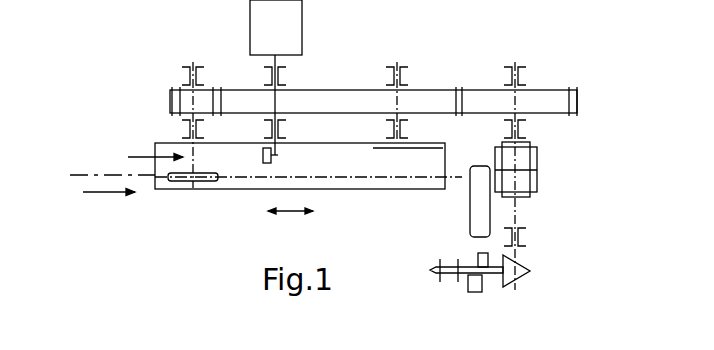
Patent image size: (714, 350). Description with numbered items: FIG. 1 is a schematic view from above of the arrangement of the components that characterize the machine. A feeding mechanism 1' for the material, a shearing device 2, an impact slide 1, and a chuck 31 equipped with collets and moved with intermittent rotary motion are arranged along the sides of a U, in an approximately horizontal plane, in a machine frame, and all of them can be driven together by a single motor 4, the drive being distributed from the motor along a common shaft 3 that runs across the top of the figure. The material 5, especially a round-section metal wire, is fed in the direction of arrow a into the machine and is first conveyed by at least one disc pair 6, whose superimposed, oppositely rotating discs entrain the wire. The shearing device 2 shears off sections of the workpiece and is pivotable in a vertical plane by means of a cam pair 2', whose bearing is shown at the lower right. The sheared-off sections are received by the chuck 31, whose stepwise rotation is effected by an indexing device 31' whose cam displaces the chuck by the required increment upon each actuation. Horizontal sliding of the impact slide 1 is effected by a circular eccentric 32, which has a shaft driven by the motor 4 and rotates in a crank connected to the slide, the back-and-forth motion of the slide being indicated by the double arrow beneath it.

The impact slide 1 is at (308, 190).
The feeding mechanism 1' is at (143, 157).
The shearing device 2 is at (453, 201).
The cam pair 2' is at (473, 289).
The drive shaft 3 is at (373, 172).
The motor 4 is at (302, 25).
The material 5 is at (82, 175).
The disc pair 6 is at (212, 183).
The chuck 31 is at (543, 169).
The indexing device 31' is at (559, 208).
The circular eccentric 32 is at (262, 164).
The feed direction arrow a is at (109, 207).